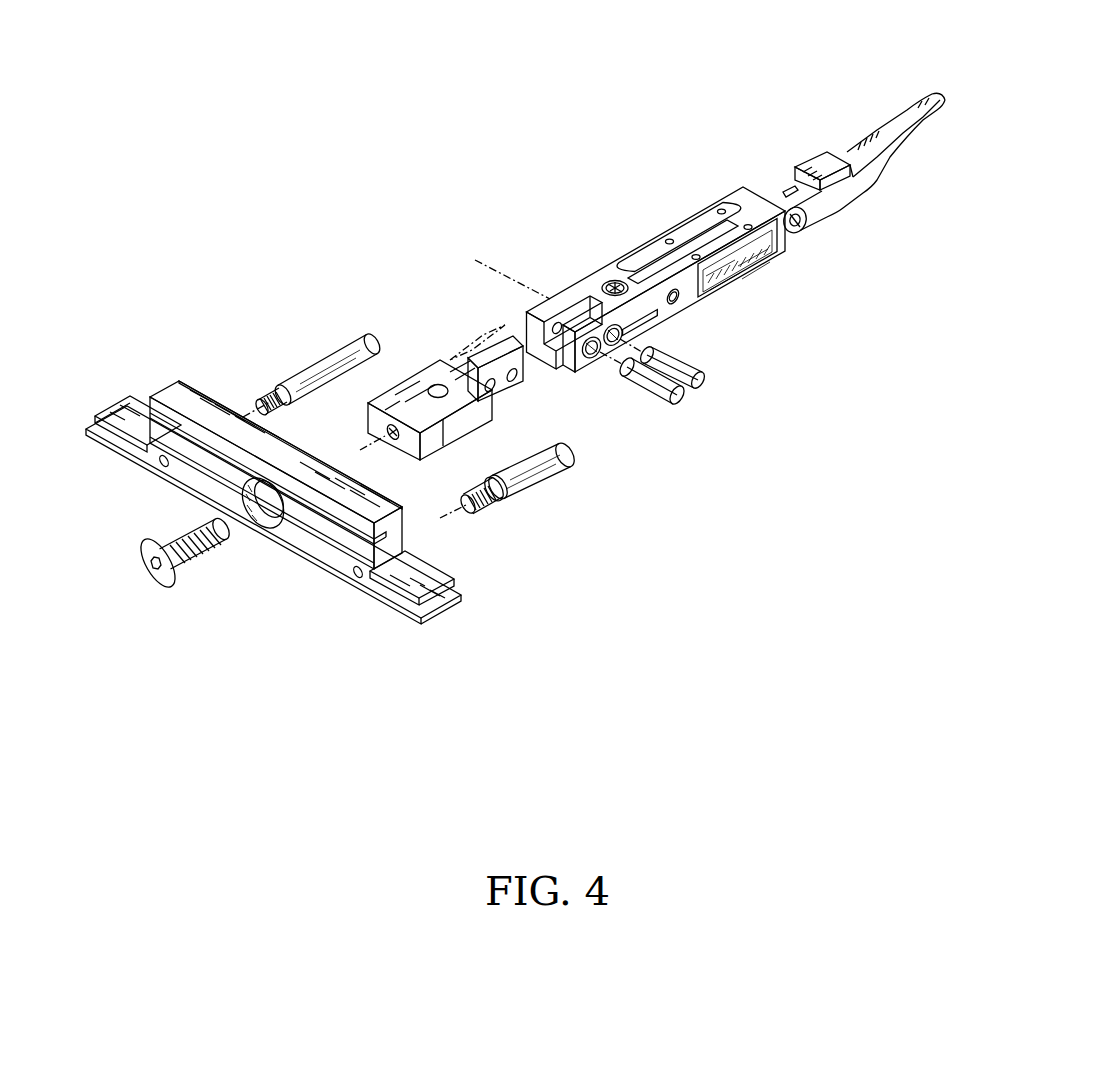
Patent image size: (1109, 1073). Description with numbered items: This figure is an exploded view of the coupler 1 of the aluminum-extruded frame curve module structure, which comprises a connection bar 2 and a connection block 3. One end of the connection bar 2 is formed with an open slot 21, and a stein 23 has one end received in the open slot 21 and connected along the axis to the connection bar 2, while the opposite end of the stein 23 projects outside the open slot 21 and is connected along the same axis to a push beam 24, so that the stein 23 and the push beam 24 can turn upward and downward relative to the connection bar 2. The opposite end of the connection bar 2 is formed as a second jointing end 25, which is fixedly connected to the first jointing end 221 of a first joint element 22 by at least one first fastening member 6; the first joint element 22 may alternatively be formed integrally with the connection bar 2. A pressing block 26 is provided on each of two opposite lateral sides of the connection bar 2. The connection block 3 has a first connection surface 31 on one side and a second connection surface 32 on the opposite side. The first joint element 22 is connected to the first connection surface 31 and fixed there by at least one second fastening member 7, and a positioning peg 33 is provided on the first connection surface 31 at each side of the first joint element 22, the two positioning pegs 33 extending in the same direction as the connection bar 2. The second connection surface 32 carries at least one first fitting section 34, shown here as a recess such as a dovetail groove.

The coupler 1 is at (574, 208).
The connection bar 2 is at (630, 262).
The open slot 21 is at (707, 228).
The first joint element 22 is at (440, 360).
The first jointing end 221 is at (503, 342).
The stein 23 is at (758, 200).
The push beam 24 is at (855, 140).
The second jointing end 25 is at (568, 313).
The pressing block 26 is at (747, 280).
The connection block 3 is at (193, 398).
The first connection surface 31 is at (227, 407).
The second connection surface 32 is at (180, 467).
The positioning peg 33 is at (333, 354).
The first fitting section 34 is at (343, 528).
The first fastening member 6 is at (677, 397).
The second fastening member 7 is at (190, 568).